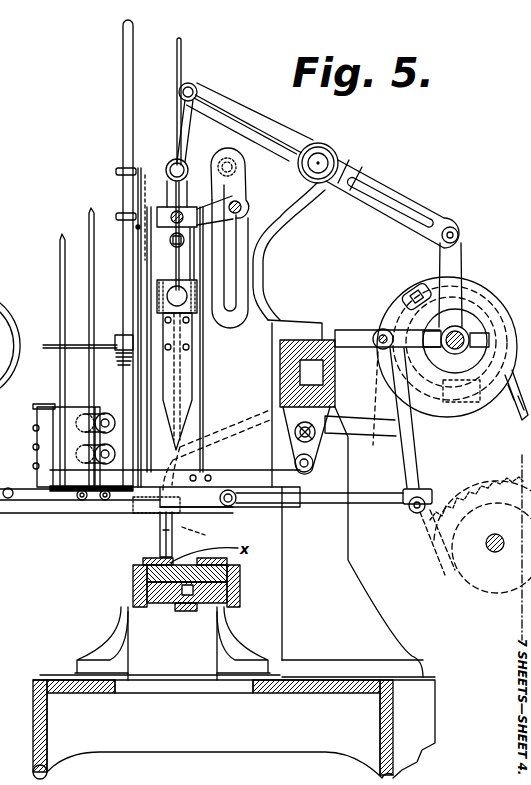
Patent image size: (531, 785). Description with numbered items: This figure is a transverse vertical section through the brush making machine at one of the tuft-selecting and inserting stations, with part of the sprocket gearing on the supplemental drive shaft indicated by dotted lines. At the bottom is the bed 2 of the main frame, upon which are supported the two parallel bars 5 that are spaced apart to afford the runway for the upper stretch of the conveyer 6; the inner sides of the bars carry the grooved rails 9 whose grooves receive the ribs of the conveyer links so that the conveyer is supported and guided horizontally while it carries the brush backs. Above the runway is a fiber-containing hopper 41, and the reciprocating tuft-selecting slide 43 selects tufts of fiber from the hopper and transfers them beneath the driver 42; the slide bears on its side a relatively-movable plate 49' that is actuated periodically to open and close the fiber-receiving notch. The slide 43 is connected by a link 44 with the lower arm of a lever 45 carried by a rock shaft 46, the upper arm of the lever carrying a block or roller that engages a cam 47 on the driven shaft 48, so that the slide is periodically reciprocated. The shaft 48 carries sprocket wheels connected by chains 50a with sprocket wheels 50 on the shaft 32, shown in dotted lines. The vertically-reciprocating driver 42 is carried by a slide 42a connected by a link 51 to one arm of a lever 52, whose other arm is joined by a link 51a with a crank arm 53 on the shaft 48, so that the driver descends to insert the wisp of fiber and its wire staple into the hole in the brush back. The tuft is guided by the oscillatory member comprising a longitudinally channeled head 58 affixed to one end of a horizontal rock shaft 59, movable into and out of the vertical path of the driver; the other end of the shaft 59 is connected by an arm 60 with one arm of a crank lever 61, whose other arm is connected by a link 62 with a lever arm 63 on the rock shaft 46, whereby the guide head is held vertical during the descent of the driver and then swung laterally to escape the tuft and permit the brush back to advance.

The bed 2 is at (33, 712).
The bars 5 is at (132, 570).
The conveyer 6 is at (186, 608).
The grooved rails 9 is at (134, 597).
The shaft 32 is at (492, 552).
The fiber-containing hopper 41 is at (60, 258).
The driver 42 is at (184, 430).
The slide 42a is at (164, 188).
The tuft-selecting slide 43 is at (270, 512).
The link 44 is at (394, 541).
The lever 45 is at (426, 460).
The rock shaft 46 is at (380, 333).
The cam 47 is at (402, 294).
The driven shaft 48 is at (462, 334).
The relatively-movable plate 49' is at (83, 481).
The sprocket wheel 50 is at (472, 547).
The chain 50a is at (417, 546).
The link 51 is at (184, 127).
The link 51a is at (466, 262).
The lever 52 is at (283, 132).
The crank arm 53 is at (474, 420).
The channeled head 58 is at (160, 545).
The rock shaft 59 is at (205, 538).
The arm 60 is at (216, 450).
The crank lever 61 is at (327, 448).
The link 62 is at (341, 447).
The lever arm 63 is at (360, 417).